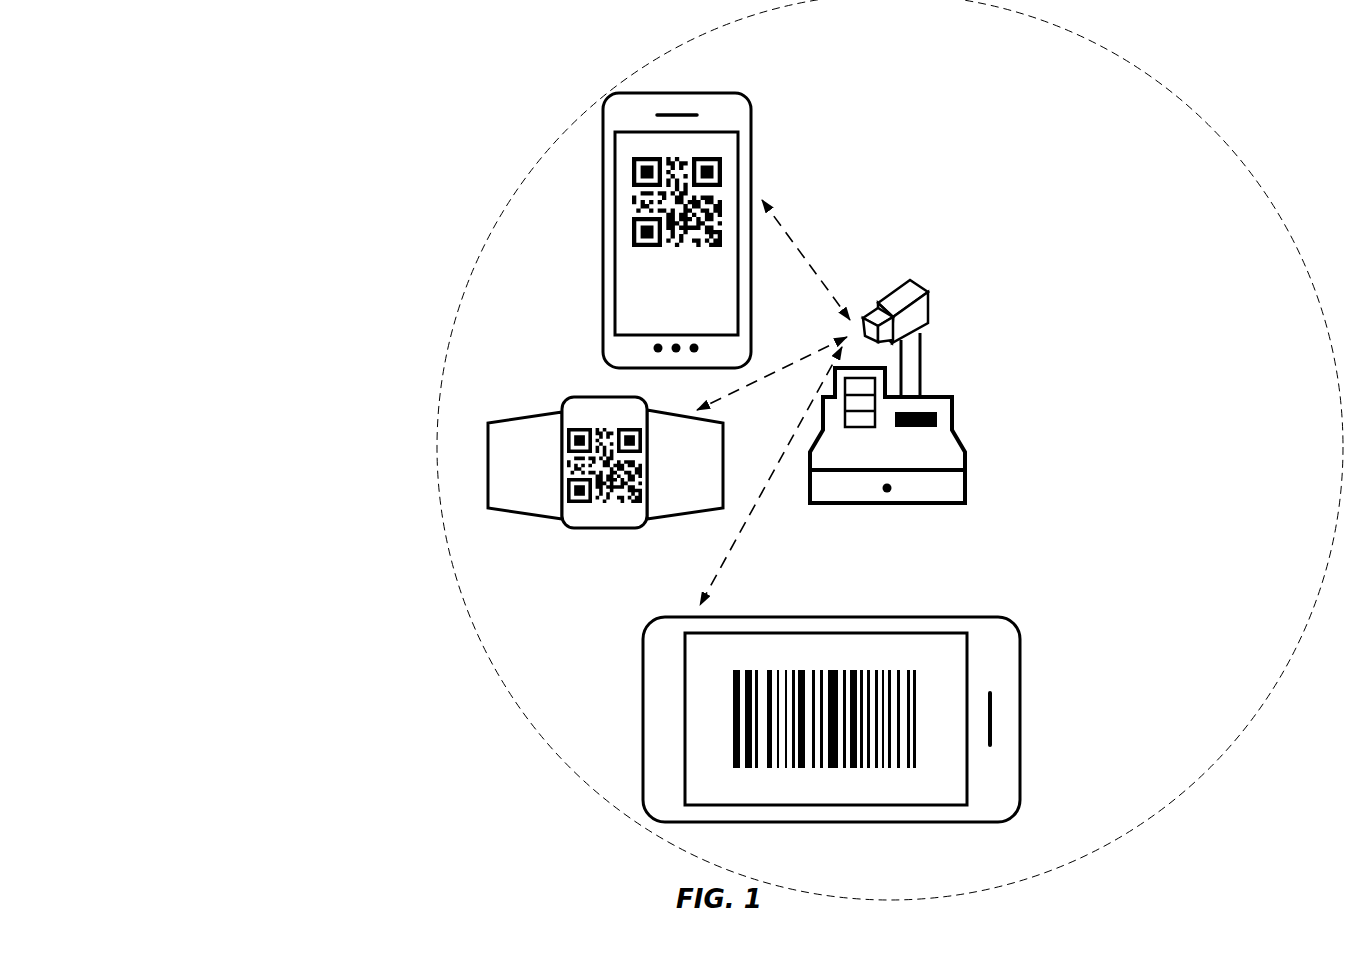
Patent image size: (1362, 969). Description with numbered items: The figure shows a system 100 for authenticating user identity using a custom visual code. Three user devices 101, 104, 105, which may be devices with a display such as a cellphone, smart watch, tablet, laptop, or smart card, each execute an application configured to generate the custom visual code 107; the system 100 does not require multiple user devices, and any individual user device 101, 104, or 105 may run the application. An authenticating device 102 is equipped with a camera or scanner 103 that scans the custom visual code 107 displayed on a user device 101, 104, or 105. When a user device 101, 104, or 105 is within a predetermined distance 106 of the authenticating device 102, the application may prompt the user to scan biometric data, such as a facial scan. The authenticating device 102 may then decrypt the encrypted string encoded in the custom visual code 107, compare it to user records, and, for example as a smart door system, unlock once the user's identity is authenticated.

The system 100 is at (52, 58).
The user device 101 is at (635, 90).
The authenticating device 102 is at (930, 515).
The camera or scanner 103 is at (865, 298).
The user device 104 is at (528, 410).
The user device 105 is at (642, 662).
The predetermined distance 106 is at (1255, 162).
The custom visual code 107 is at (625, 230).